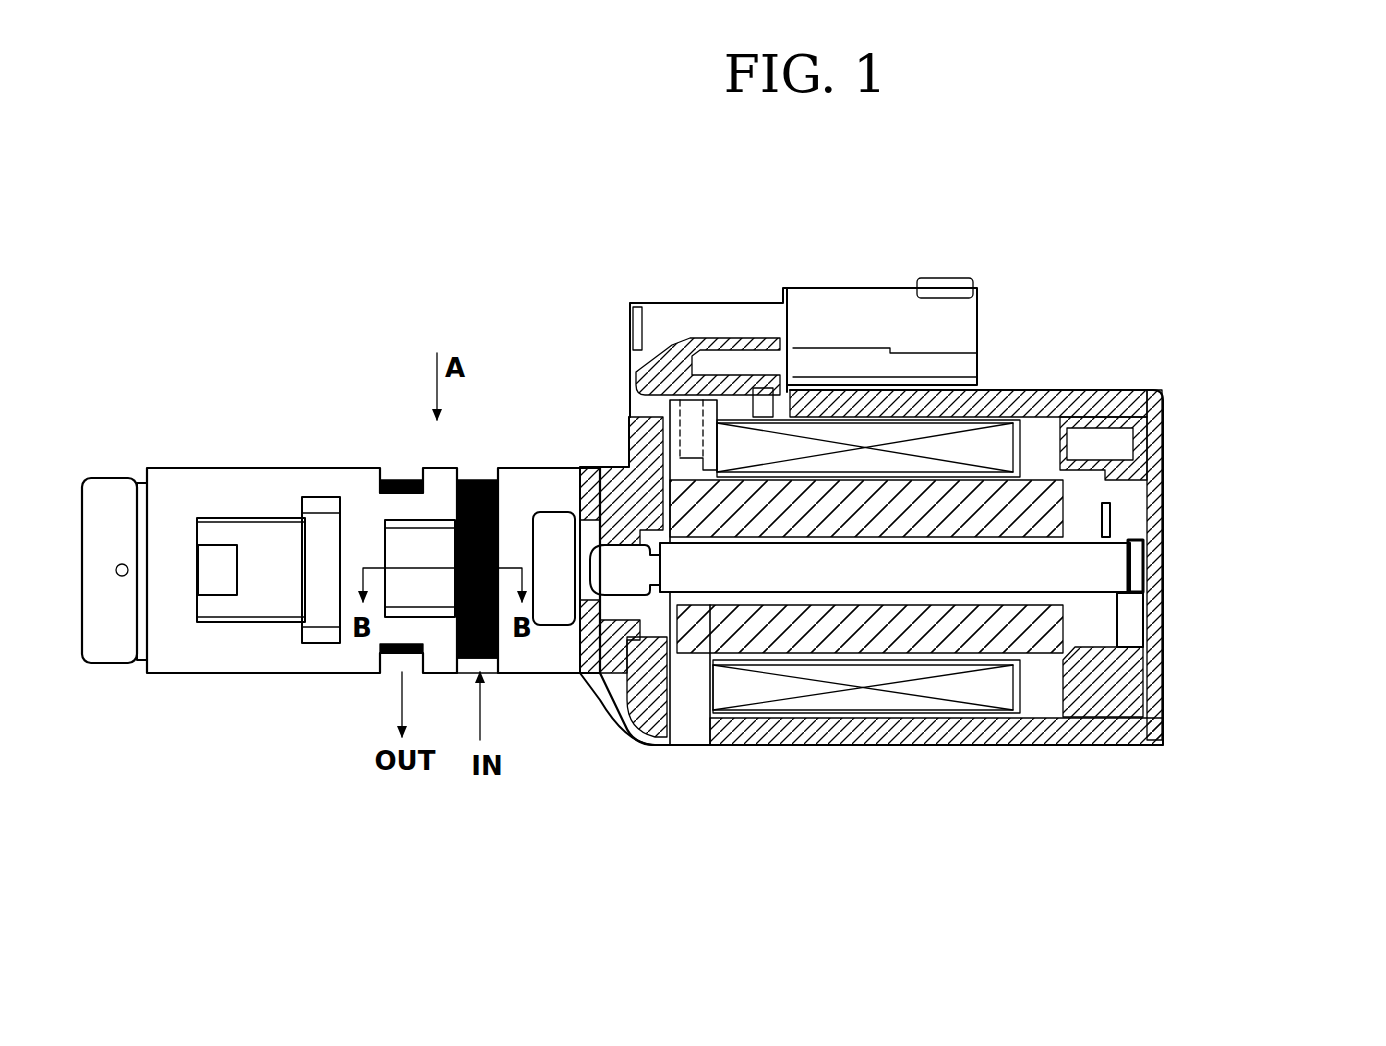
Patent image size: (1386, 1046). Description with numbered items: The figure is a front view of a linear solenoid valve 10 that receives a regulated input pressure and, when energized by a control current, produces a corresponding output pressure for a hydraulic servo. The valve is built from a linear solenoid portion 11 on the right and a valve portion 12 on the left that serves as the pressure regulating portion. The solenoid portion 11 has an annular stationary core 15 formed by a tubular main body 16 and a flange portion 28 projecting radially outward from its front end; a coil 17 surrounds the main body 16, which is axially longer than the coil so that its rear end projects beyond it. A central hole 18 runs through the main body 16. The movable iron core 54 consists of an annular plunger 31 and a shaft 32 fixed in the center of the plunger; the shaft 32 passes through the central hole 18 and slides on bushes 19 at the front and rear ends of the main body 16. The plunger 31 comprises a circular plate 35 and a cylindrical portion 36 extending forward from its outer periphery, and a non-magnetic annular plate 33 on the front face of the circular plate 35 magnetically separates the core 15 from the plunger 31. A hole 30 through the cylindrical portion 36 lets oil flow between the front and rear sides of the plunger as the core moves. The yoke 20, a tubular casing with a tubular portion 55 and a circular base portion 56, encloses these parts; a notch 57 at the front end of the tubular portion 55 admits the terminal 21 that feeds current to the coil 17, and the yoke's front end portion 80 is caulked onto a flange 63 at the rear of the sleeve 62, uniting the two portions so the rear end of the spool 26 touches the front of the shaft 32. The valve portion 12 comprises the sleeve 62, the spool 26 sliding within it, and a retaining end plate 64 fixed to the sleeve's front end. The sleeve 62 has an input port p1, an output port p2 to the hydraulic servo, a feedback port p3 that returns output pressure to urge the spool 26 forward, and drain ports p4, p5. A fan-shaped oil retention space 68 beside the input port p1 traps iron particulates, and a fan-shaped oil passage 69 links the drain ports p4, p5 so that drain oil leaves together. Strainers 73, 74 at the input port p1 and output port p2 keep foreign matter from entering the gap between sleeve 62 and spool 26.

The linear solenoid valve 10 is at (641, 283).
The linear solenoid portion 11 is at (1023, 283).
The valve portion 12 is at (318, 438).
The stationary core 15 is at (692, 643).
The main body 16 is at (740, 700).
The coil 17 is at (865, 706).
The central hole 18 is at (868, 600).
The bushes 19 is at (713, 600).
The yoke 20 is at (1011, 526).
The terminal 21 is at (737, 310).
The spool 26 is at (617, 555).
The flange portion 28 is at (683, 745).
The hole 30 is at (1095, 425).
The plunger 31 is at (1188, 655).
The shaft 32 is at (1150, 575).
The annular plate 33 is at (1152, 522).
The circular plate 35 is at (1155, 625).
The cylindrical portion 36 is at (1130, 690).
The movable iron core 54 is at (1221, 628).
The tubular portion 55 is at (1132, 390).
The circular base portion 56 is at (1195, 565).
The notch 57 is at (772, 345).
The sleeve 62 is at (545, 458).
The flange 63 is at (630, 728).
The retaining end plate 64 is at (118, 657).
The oil retention space 68 is at (410, 545).
The oil passage 69 is at (250, 535).
The strainer 73 is at (476, 480).
The strainer 74 is at (405, 480).
The front end portion 80 is at (628, 742).
The input port p1 is at (486, 665).
The output port p2 is at (393, 665).
The feedback port p3 is at (576, 628).
The drain port p4 is at (310, 660).
The drain port p5 is at (215, 660).